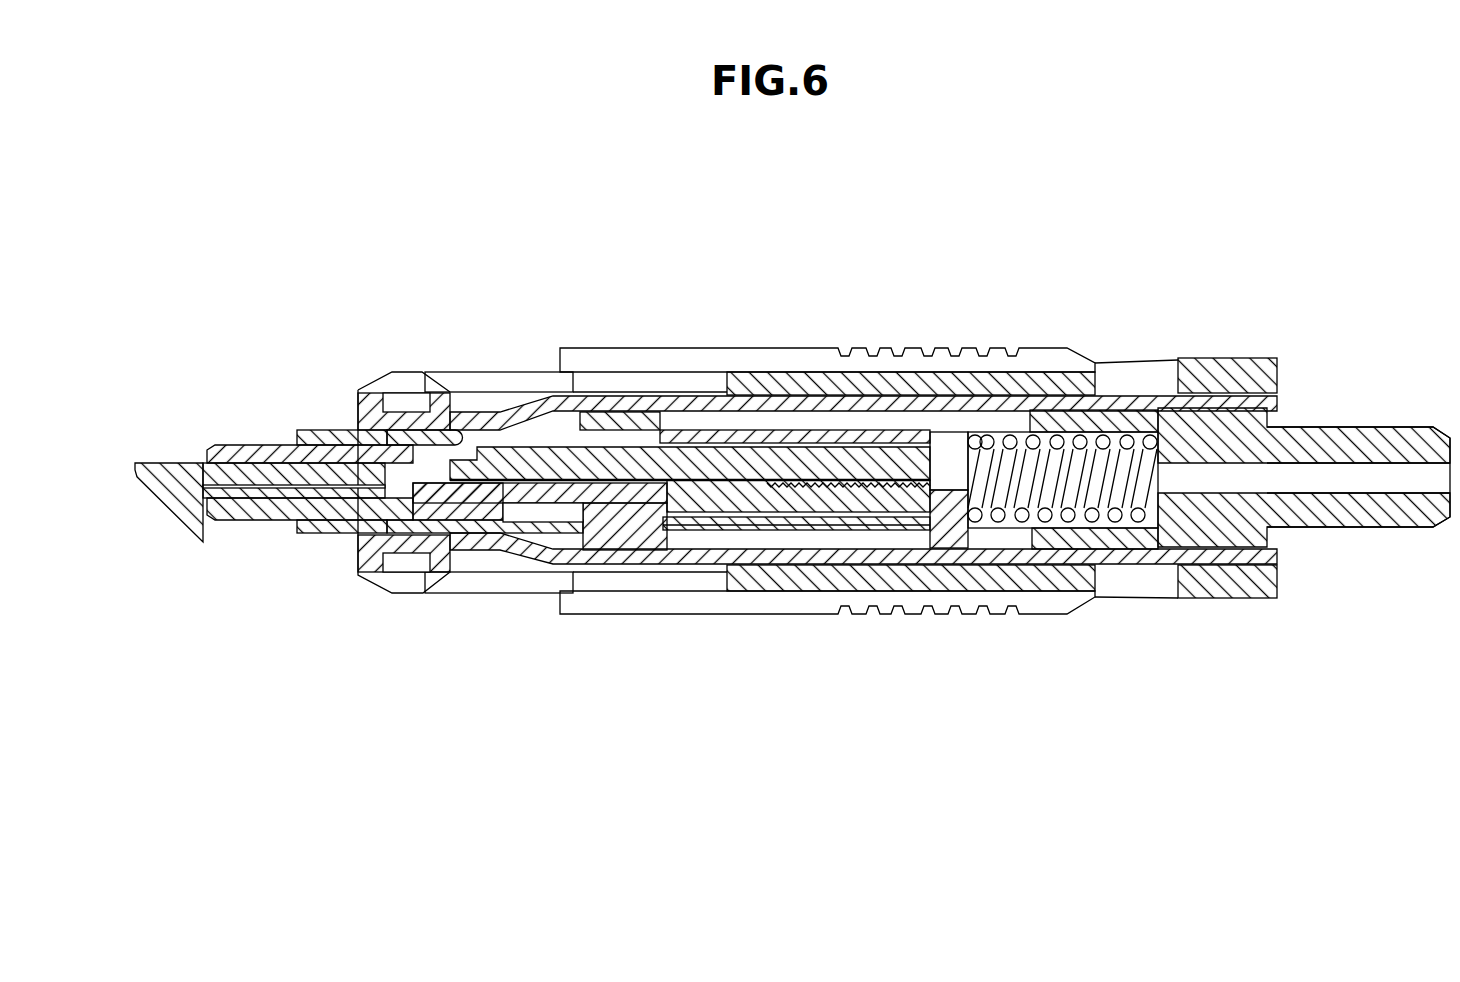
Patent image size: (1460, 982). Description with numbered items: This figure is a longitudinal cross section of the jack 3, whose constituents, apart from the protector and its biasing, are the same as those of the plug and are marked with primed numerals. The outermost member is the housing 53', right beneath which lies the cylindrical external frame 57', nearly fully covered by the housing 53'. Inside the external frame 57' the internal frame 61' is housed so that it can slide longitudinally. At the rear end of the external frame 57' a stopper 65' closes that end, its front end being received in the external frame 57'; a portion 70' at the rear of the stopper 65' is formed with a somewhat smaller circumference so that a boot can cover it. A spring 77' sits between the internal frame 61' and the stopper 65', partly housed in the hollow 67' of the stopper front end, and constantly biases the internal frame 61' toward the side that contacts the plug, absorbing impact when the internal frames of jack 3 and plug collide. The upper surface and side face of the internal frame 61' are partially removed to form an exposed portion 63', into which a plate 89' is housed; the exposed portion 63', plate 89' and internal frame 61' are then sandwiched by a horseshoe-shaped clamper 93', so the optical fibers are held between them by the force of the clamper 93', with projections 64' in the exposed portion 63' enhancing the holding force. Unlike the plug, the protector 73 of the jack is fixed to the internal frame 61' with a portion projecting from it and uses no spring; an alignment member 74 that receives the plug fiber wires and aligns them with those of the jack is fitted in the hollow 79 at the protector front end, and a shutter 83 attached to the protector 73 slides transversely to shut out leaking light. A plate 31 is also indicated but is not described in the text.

The jack 3 is at (1150, 618).
The retaining plate 31 is at (480, 410).
The housing 53' is at (429, 439).
The external frame 57' is at (863, 536).
The internal frame 61' is at (583, 587).
The exposed portion 63' is at (690, 372).
The projections 64' is at (836, 560).
The stopper 65' is at (1304, 445).
The hollow 67' is at (1094, 413).
The smaller formed portion 70' is at (1358, 522).
The protector 73 is at (260, 515).
The alignment member 74 is at (283, 462).
The spring 77' is at (1028, 379).
The hollow 79 is at (332, 460).
The shutter 83 is at (163, 462).
The plate 89' is at (755, 349).
The clamper 93' is at (801, 589).